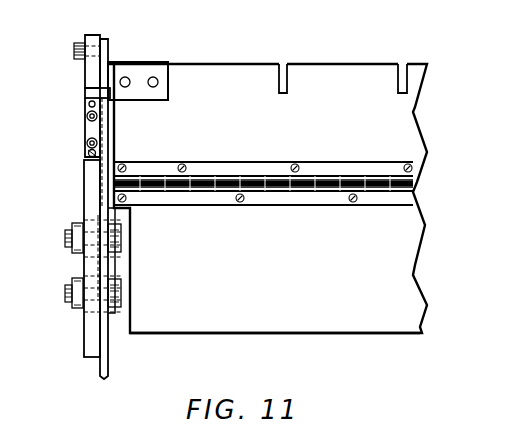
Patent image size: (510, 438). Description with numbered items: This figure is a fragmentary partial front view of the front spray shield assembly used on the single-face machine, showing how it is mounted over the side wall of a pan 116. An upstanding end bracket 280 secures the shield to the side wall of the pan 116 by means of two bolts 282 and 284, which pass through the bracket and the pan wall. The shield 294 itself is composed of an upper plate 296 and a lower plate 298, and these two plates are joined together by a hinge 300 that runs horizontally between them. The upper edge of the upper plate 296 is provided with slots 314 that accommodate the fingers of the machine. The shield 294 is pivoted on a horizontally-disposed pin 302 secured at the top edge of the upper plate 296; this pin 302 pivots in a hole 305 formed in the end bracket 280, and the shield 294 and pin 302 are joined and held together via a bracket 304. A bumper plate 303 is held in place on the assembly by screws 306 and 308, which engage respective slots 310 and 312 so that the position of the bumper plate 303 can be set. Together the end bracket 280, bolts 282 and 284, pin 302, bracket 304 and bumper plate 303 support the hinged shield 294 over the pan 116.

The pan 116 is at (106, 367).
The end bracket 280 is at (88, 335).
The bolt 282 is at (67, 237).
The bolt 284 is at (65, 287).
The shield 294 is at (424, 273).
The upper plate 296 is at (407, 108).
The lower plate 298 is at (407, 322).
The hinge 300 is at (405, 193).
The pin 302 is at (77, 48).
The bumper plate 303 is at (103, 123).
The bracket 304 is at (143, 65).
The hole 305 is at (84, 62).
The screw 306 is at (87, 117).
The screw 308 is at (87, 145).
The slot 310 is at (88, 106).
The slot 312 is at (83, 153).
The slots 314 is at (403, 67).